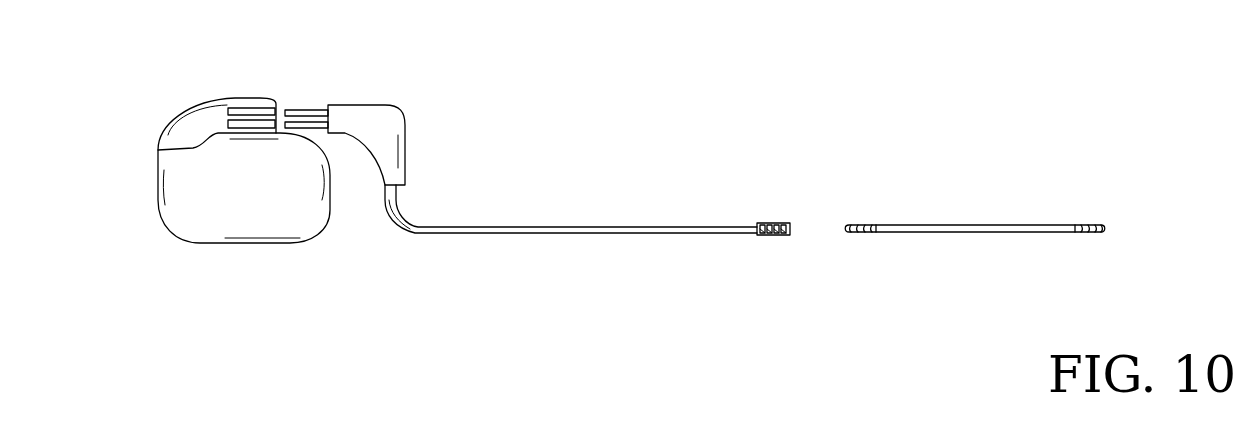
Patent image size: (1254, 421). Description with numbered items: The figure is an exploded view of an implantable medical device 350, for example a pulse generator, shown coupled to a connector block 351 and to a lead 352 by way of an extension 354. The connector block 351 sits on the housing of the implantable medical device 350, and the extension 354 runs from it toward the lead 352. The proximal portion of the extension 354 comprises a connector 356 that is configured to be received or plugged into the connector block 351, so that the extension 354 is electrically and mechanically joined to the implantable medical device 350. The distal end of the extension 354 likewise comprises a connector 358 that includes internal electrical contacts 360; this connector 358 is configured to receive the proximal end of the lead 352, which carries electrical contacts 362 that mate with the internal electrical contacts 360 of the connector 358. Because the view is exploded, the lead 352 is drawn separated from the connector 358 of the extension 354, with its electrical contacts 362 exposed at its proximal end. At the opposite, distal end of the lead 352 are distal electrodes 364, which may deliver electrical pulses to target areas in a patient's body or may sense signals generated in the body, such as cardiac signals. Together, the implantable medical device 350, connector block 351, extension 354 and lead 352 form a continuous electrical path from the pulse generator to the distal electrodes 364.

The implantable medical device 350 is at (280, 243).
The connector block 351 is at (212, 100).
The lead 352 is at (1012, 225).
The extension 354 is at (517, 225).
The connector 356 is at (375, 102).
The connector 358 is at (762, 223).
The internal electrical contacts 360 is at (783, 223).
The electrical contacts 362 is at (860, 225).
The distal electrodes 364 is at (1082, 224).